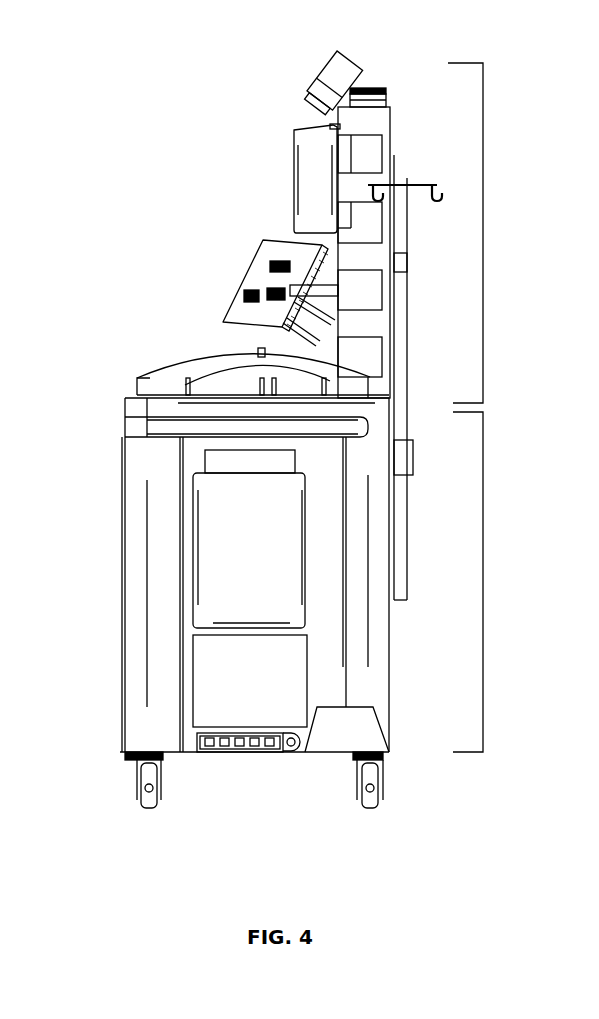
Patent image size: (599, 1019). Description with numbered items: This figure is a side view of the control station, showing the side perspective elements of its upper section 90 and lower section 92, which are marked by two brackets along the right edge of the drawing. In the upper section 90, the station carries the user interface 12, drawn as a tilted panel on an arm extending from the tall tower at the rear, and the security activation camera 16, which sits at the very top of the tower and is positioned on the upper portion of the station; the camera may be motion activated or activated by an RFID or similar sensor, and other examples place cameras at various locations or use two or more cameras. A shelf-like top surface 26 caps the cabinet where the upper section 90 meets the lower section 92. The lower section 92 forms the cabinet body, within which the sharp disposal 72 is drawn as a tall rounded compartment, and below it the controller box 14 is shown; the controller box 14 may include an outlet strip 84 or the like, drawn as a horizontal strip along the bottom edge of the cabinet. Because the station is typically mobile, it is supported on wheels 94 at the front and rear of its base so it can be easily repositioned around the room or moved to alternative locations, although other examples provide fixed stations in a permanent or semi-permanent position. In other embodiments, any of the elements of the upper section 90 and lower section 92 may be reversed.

The user interface 12 is at (262, 250).
The controller box 14 is at (220, 697).
The security activation camera 16 is at (328, 88).
The shelf 26 is at (130, 395).
The sharp disposal 72 is at (210, 550).
The outlet strip 84 is at (262, 752).
The upper section 90 is at (475, 233).
The lower section 92 is at (478, 582).
The wheels 94 is at (150, 803).